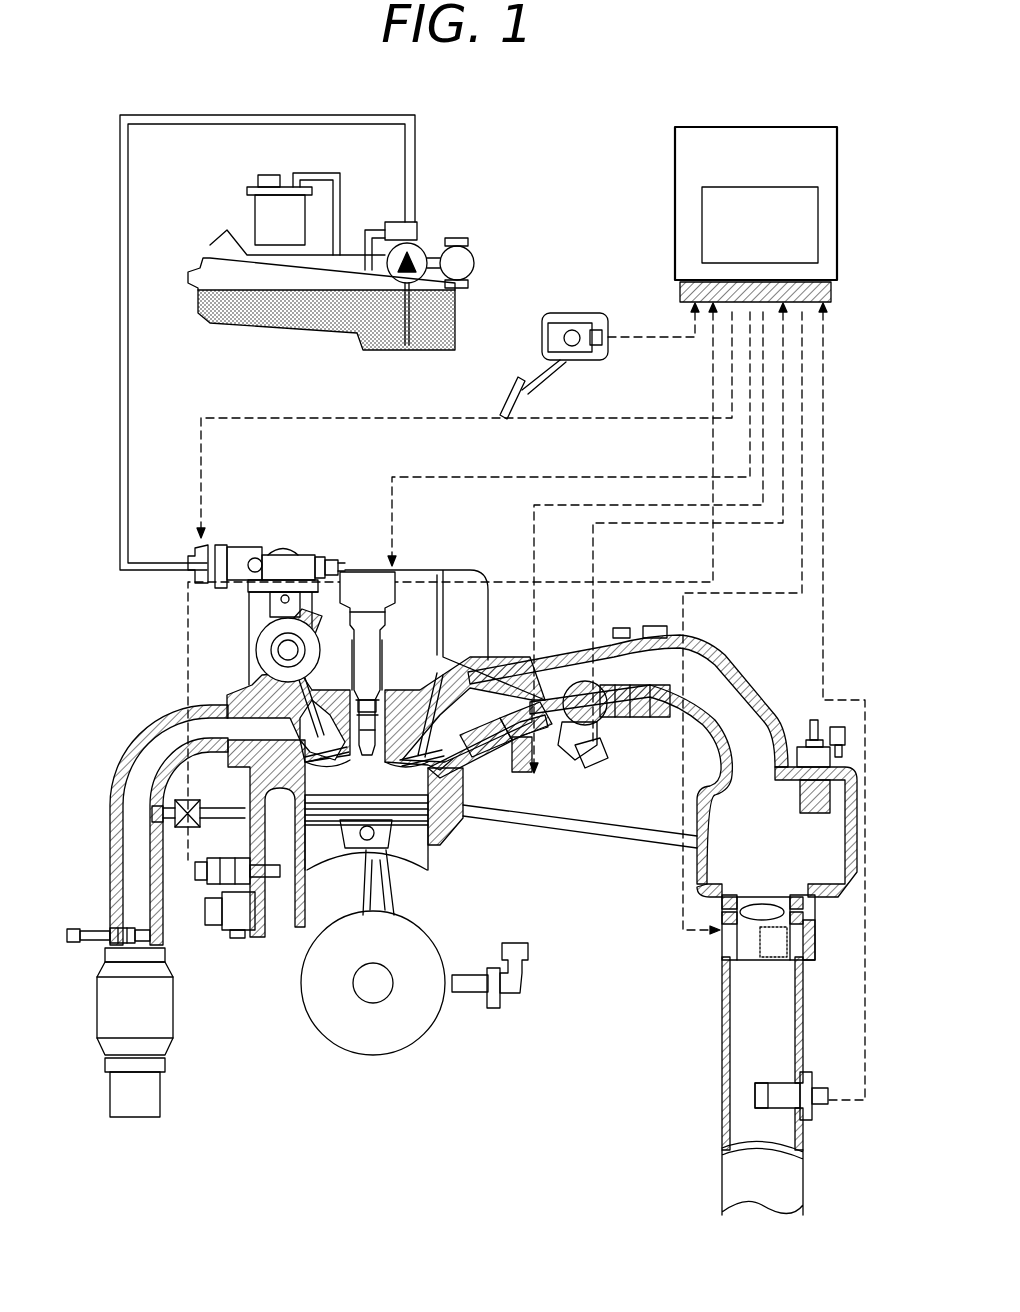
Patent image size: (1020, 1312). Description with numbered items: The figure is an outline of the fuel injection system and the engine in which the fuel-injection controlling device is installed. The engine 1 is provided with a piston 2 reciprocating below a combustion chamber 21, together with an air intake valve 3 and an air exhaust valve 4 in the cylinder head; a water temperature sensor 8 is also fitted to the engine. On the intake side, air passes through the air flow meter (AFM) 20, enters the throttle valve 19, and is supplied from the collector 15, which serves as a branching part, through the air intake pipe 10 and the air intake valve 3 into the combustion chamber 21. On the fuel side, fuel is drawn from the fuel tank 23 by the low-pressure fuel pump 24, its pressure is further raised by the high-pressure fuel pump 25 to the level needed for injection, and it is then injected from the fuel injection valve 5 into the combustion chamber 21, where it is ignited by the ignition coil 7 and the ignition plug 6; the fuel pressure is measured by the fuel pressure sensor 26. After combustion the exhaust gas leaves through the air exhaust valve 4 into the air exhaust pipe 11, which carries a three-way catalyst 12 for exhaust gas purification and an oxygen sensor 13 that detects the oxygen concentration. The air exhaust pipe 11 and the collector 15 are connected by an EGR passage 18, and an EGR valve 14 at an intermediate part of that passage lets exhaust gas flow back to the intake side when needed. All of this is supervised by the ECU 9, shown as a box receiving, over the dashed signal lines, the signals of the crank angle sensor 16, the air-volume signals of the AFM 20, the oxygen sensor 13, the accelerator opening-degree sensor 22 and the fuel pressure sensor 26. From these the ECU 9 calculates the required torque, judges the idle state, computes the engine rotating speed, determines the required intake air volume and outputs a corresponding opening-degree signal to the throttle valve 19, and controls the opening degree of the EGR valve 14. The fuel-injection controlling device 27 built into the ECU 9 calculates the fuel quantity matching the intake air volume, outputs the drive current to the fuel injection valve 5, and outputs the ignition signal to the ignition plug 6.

The engine 1 is at (458, 822).
The piston 2 is at (413, 873).
The air intake valve 3 is at (418, 690).
The air exhaust valve 4 is at (325, 758).
The fuel injection valve 5 is at (513, 745).
The ignition plug 6 is at (377, 752).
The ignition coil 7 is at (368, 583).
The water temperature sensor 8 is at (272, 882).
The ECU (Engine Control Unit) 9 is at (721, 210).
The air intake pipe 10 is at (522, 660).
The air exhaust pipe 11 is at (122, 748).
The three-way catalyst 12 is at (165, 1020).
The oxygen sensor 13 is at (93, 945).
The EGR valve 14 is at (186, 828).
The collector 15 is at (712, 810).
The crank angle sensor 16 is at (512, 985).
The EGR passage 18 is at (620, 832).
The throttle valve 19 is at (822, 960).
The AFM 20 is at (822, 1112).
The combustion chamber 21 is at (410, 828).
The accelerator opening-degree sensor 22 is at (572, 313).
The fuel tank 23 is at (345, 325).
The low-pressure fuel pump 24 is at (448, 240).
The high-pressure fuel pump 25 is at (285, 553).
The fuel pressure sensor 26 is at (600, 745).
The fuel-injection controlling device 27 is at (712, 218).